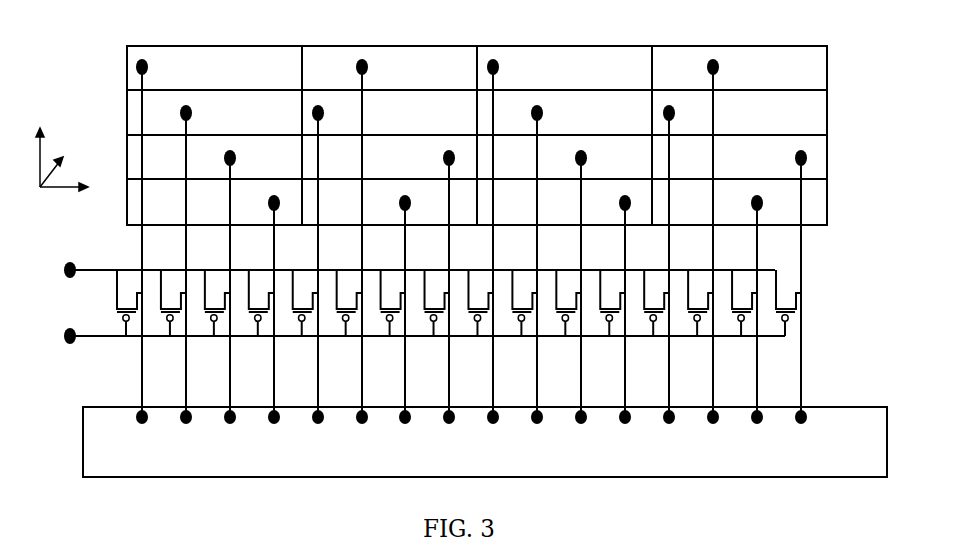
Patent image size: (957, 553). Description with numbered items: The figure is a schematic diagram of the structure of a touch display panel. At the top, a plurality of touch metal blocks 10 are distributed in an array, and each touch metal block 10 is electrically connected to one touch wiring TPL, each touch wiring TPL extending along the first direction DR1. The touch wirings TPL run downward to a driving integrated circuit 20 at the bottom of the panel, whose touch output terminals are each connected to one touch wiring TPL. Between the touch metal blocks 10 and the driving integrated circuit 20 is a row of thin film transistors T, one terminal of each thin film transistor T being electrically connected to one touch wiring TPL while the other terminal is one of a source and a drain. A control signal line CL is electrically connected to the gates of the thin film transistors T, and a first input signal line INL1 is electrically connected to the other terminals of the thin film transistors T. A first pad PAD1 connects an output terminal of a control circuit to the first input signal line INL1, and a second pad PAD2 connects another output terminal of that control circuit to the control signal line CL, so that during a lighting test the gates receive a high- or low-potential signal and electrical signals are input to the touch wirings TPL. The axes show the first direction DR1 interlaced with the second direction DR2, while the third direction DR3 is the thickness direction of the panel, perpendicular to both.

The touch metal block 10 is at (185, 62).
The driving integrated circuit 20 is at (111, 407).
The first pad PAD1 is at (415, 262).
The second pad PAD2 is at (420, 328).
The first input signal line INL1 is at (764, 269).
The control signal line CL is at (770, 336).
The thin film transistor T is at (459, 303).
The touch wiring TPL is at (802, 375).
The first direction DR1 is at (49, 149).
The second direction DR2 is at (79, 188).
The third direction DR3 is at (61, 165).